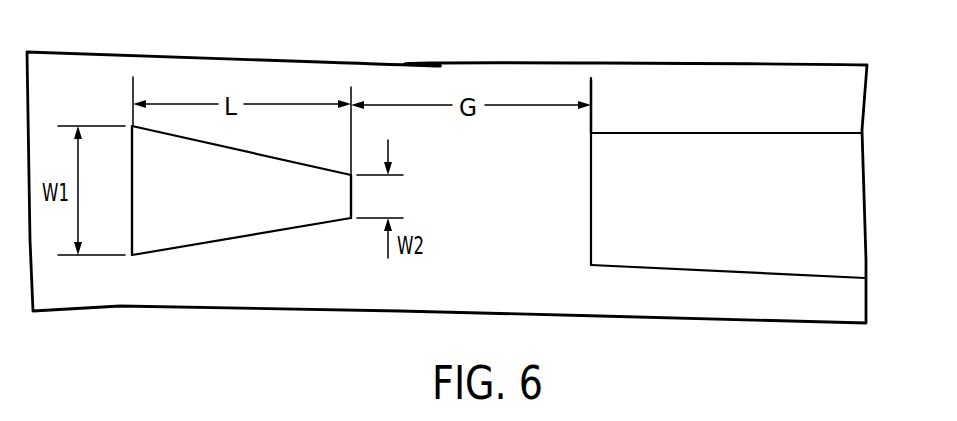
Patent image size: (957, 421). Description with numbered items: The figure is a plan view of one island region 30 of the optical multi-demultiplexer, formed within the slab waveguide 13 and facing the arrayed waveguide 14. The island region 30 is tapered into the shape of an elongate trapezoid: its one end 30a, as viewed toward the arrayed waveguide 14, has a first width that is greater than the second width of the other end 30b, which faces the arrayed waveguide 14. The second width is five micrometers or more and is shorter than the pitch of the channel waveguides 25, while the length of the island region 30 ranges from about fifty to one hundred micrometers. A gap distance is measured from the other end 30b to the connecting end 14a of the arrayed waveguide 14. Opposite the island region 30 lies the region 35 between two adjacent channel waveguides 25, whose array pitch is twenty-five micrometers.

The slab waveguide 13 is at (409, 57).
The arrayed waveguide 14 is at (763, 63).
The connecting end of the arrayed waveguide 14a is at (591, 76).
The channel waveguide 25 is at (787, 99).
The region between adjacent channel waveguides 35 is at (591, 224).
The island region 30 is at (283, 160).
The one end of the island region 30a is at (132, 205).
The other end of the island region 30b is at (351, 200).